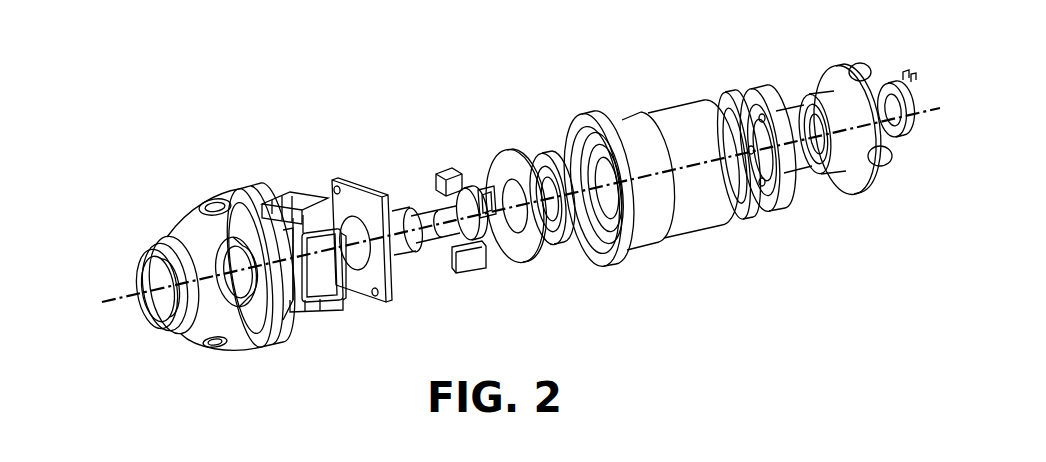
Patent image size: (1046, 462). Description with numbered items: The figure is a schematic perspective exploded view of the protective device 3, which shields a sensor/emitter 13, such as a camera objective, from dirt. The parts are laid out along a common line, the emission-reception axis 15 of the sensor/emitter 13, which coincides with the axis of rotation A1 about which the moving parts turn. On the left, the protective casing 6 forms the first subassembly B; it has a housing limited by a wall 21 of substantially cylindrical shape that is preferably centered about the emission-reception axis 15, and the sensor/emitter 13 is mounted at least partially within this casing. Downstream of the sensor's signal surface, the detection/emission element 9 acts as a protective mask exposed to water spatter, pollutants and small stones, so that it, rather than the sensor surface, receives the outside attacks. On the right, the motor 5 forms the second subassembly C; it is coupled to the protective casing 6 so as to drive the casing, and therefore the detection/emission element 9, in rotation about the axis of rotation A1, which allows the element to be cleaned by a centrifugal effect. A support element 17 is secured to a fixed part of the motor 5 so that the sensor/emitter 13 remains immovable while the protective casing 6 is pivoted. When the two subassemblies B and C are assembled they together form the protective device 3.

The protective device 3 is at (110, 255).
The detection/emission element 9 is at (147, 245).
The protective casing 6 is at (201, 348).
The wall 21 is at (243, 331).
The emission-reception axis 15 is at (122, 302).
The sensor/emitter 13 is at (324, 318).
The support element 17 is at (394, 258).
The motor 5 is at (681, 251).
The first subassembly B is at (100, 293).
The second subassembly C is at (800, 223).
The axis of rotation A1 is at (925, 112).